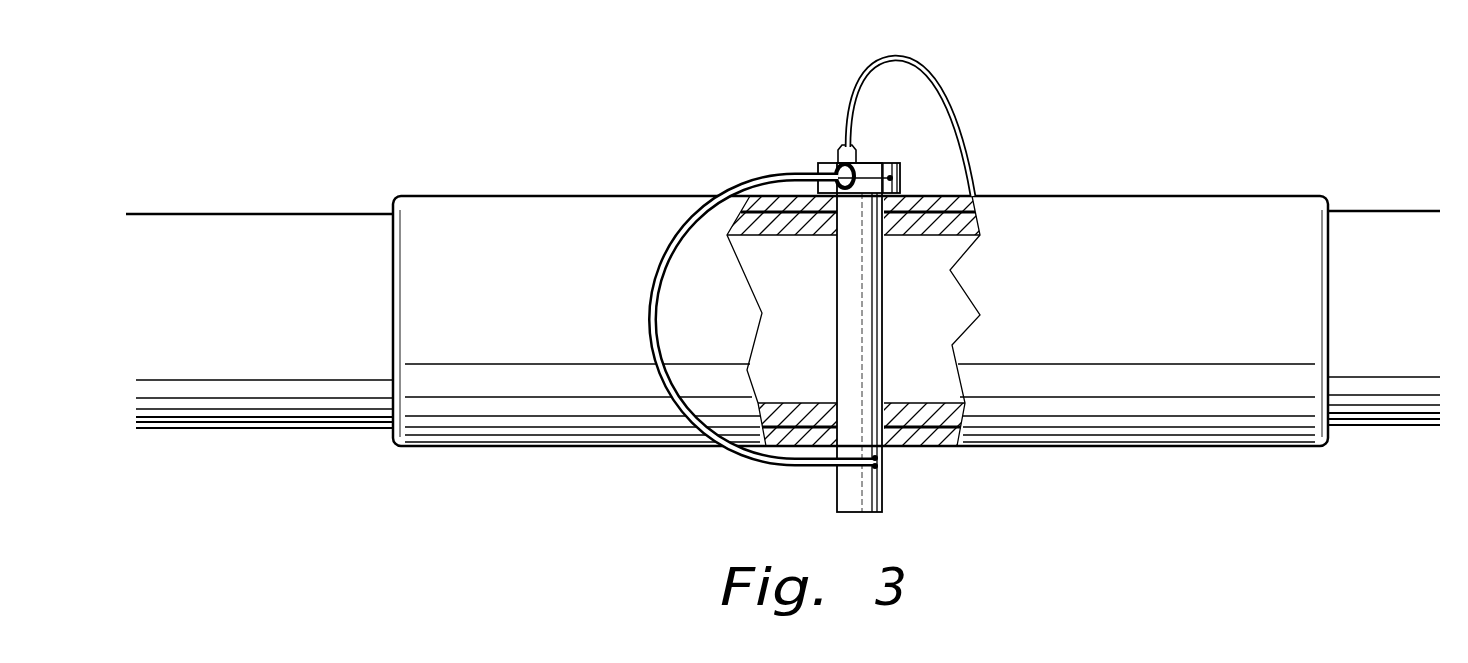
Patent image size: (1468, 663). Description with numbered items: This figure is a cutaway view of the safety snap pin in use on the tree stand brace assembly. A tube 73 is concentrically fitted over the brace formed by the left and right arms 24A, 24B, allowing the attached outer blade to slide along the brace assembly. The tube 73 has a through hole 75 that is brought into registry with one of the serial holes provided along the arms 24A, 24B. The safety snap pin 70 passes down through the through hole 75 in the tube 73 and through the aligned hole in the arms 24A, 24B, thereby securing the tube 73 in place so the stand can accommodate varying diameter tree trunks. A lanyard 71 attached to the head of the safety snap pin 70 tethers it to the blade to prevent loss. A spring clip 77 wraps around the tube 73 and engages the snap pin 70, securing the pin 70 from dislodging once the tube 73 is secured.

The left arm 24A is at (1385, 209).
The right arm 24B is at (907, 236).
The safety snap pin 70 is at (828, 163).
The lanyard 71 is at (947, 93).
The tube 73 is at (1148, 285).
The through hole 75 is at (812, 319).
The spring clip 77 is at (652, 300).